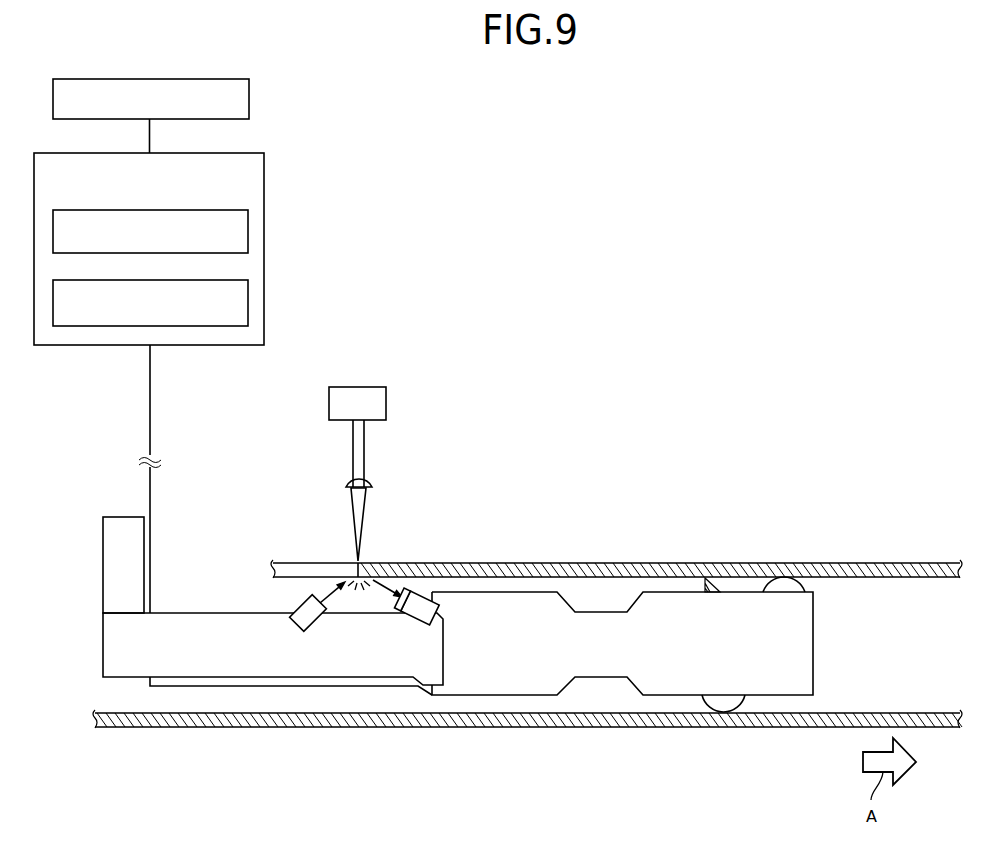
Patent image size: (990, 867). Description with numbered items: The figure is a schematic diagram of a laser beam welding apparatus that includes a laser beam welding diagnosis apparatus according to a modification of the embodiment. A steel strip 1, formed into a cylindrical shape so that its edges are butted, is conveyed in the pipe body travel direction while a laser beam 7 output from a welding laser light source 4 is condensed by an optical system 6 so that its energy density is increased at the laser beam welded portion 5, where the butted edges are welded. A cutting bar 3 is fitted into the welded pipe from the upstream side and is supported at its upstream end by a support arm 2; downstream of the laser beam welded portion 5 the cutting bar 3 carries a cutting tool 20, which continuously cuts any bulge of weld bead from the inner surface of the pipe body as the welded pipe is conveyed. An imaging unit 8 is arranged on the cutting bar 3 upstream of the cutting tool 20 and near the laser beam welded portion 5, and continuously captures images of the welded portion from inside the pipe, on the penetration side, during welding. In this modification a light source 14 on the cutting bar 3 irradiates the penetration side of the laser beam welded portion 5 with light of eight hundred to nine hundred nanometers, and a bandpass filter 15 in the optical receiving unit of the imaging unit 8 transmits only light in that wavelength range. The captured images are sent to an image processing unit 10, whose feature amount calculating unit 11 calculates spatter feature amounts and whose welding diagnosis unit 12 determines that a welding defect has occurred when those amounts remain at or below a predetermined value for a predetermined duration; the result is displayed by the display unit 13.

The steel strip 1 is at (880, 563).
The support arm 2 is at (103, 541).
The cutting bar 3 is at (103, 634).
The welding laser light source 4 is at (361, 387).
The laser beam welded portion 5 is at (364, 563).
The optical system 6 is at (372, 486).
The laser beam 7 is at (355, 505).
The imaging unit 8 is at (424, 591).
The image processing unit 10 is at (218, 153).
The feature amount calculating unit 11 is at (198, 210).
The welding diagnosis unit 12 is at (198, 280).
The display unit 13 is at (198, 79).
The light source 14 is at (295, 607).
The bandpass filter 15 is at (396, 605).
The cutting tool 20 is at (702, 578).